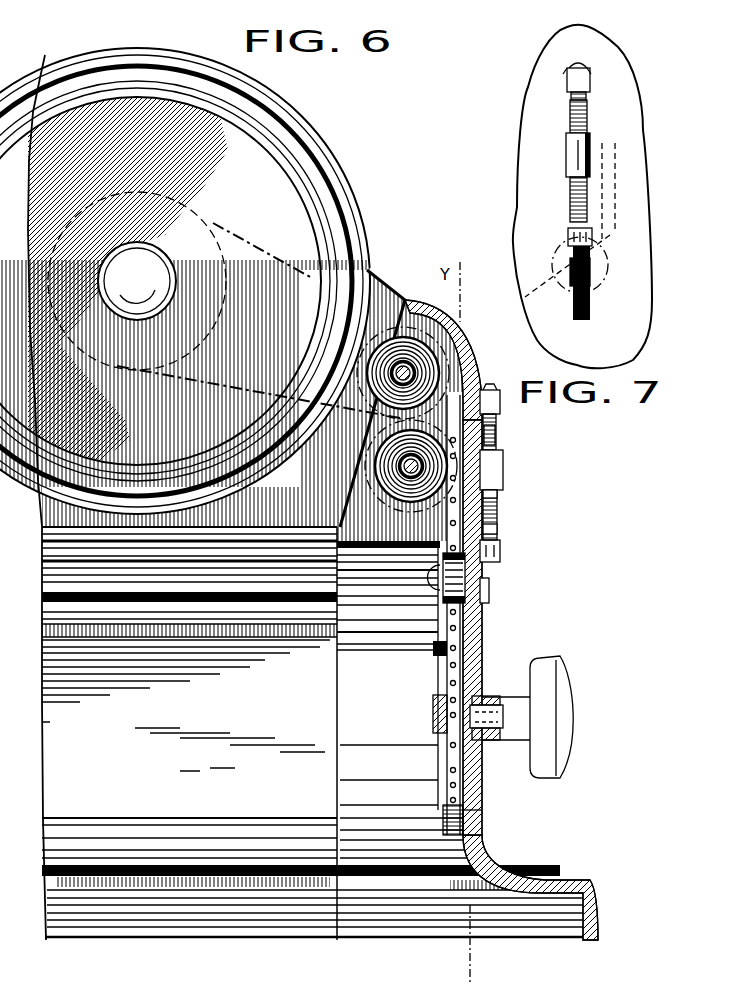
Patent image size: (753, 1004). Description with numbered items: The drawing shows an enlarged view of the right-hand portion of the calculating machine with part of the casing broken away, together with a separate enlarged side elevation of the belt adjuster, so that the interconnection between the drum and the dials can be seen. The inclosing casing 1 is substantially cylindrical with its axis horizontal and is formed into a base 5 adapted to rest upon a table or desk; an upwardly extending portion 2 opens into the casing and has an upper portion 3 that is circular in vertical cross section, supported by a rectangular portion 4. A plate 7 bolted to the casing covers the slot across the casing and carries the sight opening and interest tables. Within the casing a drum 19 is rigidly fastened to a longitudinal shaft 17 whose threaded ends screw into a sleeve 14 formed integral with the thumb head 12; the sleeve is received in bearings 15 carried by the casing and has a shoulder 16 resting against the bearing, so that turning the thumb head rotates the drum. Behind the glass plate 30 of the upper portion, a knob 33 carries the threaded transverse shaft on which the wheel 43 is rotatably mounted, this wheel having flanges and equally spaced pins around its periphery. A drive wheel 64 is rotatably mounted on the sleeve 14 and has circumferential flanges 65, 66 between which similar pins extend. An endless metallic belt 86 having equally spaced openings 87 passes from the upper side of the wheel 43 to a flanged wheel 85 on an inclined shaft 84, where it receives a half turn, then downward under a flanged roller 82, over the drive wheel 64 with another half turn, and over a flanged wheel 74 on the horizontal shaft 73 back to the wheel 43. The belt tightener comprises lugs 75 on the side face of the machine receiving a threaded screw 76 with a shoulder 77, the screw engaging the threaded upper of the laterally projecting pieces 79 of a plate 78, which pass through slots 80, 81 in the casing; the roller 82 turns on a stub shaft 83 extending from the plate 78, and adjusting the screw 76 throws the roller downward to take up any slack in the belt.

In FIG. 6, the inclosing casing 1 is at (294, 497).
In FIG. 6, the upwardly extending portion 2 is at (368, 410).
In FIG. 7, the upwardly extending portion 2 is at (643, 247).
In FIG. 6, the upper portion 3 is at (355, 204).
In FIG. 6, the rectangular portion 4 is at (235, 405).
In FIG. 6, the base 5 is at (588, 914).
In FIG. 6, the plate 7 is at (189, 582).
In FIG. 6, the thumb head 12 is at (567, 705).
In FIG. 6, the sleeve 14 is at (510, 697).
In FIG. 6, the bearings 15 is at (490, 733).
In FIG. 6, the shoulder 16 is at (498, 715).
In FIG. 6, the longitudinal shaft 17 is at (433, 711).
In FIG. 6, the drum 19 is at (408, 699).
In FIG. 6, the glass plate 30 is at (200, 260).
In FIG. 6, the knob 33 is at (153, 293).
In FIG. 6, the wheel 43 is at (218, 245).
In FIG. 6, the drive wheel 64 is at (482, 645).
In FIG. 6, the circumferential flange 65 is at (442, 808).
In FIG. 6, the circumferential flange 66 is at (472, 810).
In FIG. 6, the horizontal shaft 73 is at (438, 652).
In FIG. 6, the flanged wheel 74 is at (492, 437).
In FIG. 6, the lugs 75 is at (490, 392).
In FIG. 7, the lugs 75 is at (593, 82).
In FIG. 6, the threaded screw 76 is at (497, 512).
In FIG. 7, the threaded screw 76 is at (590, 205).
In FIG. 6, the shoulder 77 is at (498, 420).
In FIG. 7, the shoulder 77 is at (588, 95).
In FIG. 6, the plate 78 is at (497, 528).
In FIG. 6, the laterally projecting pieces 79 is at (503, 458).
In FIG. 7, the laterally projecting pieces 79 is at (590, 138).
In FIG. 7, the slot 80 is at (592, 313).
In FIG. 7, the slot 81 is at (568, 115).
In FIG. 6, the flanged roller 82 is at (466, 573).
In FIG. 7, the flanged roller 82 is at (555, 250).
In FIG. 6, the stub shaft 83 is at (437, 582).
In FIG. 6, the inclined shaft 84 is at (395, 368).
In FIG. 6, the flanged wheel 85 is at (416, 320).
In FIG. 6, the endless metallic belt 86 is at (497, 497).
In FIG. 7, the endless metallic belt 86 is at (613, 223).
In FIG. 6, the openings 87 is at (437, 625).